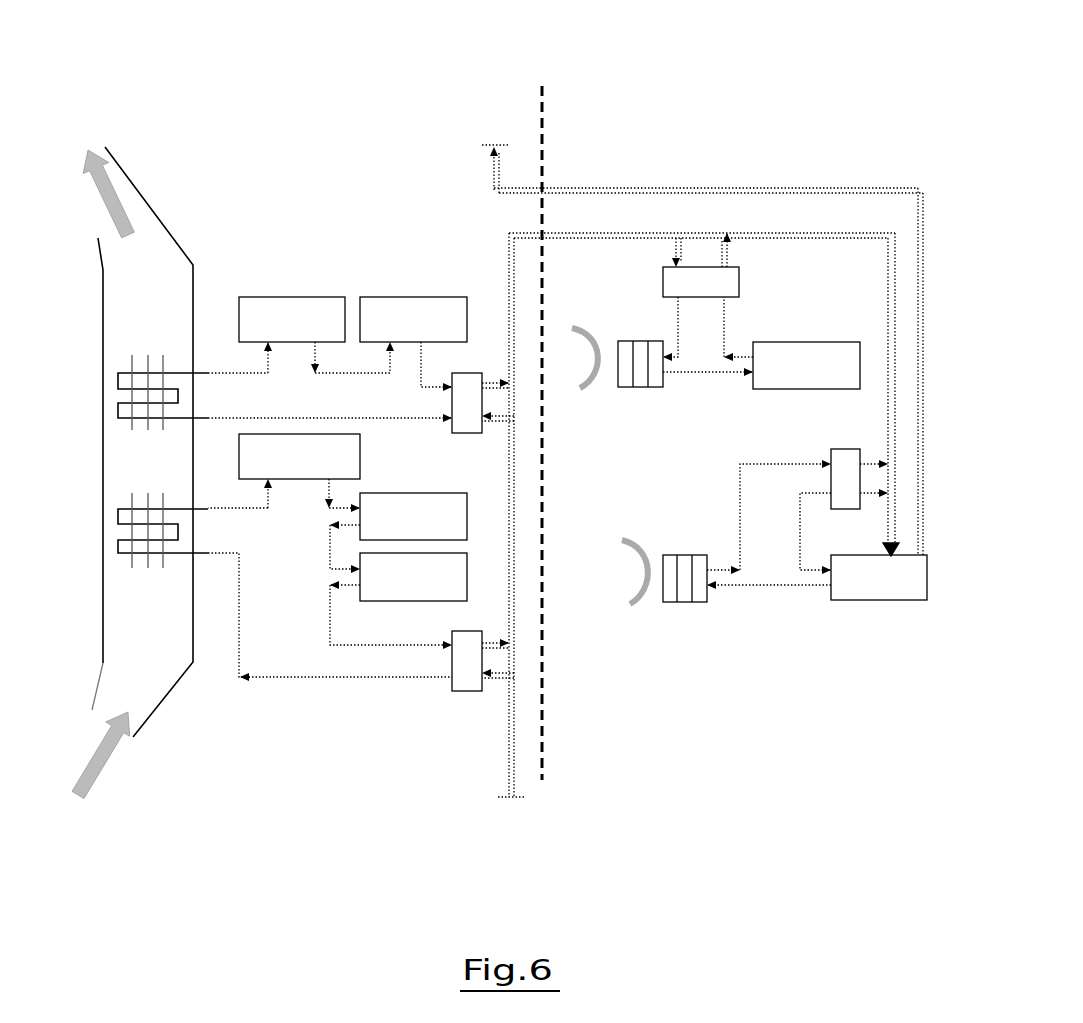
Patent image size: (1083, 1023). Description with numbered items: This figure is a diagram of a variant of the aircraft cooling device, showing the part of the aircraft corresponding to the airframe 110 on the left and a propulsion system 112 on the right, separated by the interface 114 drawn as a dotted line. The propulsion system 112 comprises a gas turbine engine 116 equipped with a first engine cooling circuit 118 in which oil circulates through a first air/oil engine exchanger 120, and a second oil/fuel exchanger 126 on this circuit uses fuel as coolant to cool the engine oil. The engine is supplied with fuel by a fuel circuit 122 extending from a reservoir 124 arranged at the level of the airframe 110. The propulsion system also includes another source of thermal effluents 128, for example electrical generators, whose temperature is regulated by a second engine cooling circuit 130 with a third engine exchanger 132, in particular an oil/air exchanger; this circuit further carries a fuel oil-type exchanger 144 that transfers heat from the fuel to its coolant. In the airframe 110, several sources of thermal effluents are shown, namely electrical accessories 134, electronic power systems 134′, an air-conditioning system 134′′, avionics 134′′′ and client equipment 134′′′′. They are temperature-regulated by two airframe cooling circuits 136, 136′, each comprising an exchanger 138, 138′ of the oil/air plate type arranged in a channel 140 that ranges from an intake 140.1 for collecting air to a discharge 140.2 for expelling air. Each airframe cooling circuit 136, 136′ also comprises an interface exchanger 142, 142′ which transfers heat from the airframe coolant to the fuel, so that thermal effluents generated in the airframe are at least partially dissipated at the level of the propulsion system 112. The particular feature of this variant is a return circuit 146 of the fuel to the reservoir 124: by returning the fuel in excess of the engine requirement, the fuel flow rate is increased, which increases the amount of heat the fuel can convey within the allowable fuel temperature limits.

The airframe 110 is at (296, 95).
The propulsion system 112 is at (712, 95).
The interface 114 is at (542, 90).
The gas turbine engine 116 is at (838, 592).
The first engine cooling circuit 118 is at (740, 525).
The first air/oil engine exchanger 120 is at (667, 590).
The fuel circuit 122 is at (615, 233).
The reservoir 124 is at (488, 143).
The second oil/fuel exchanger 126 is at (833, 452).
The source of thermal effluents 128 is at (770, 350).
The second engine cooling circuit 130 is at (675, 372).
The third engine exchanger 132 is at (637, 387).
The electrical accessories 134 is at (261, 302).
The electronic power systems 134′ is at (381, 302).
The air-conditioning system 134′′ is at (356, 464).
The avionics 134′′′ is at (390, 500).
The client equipment 134′′′′ is at (373, 594).
The airframe cooling circuit 136 is at (316, 418).
The airframe cooling circuit 136′ is at (347, 677).
The exchanger 138 is at (133, 372).
The exchanger 138′ is at (118, 508).
The channel 140 is at (103, 618).
The intake 140.1 is at (133, 737).
The discharge 140.2 is at (130, 180).
The interface exchanger 142 is at (456, 402).
The interface exchanger 142′ is at (462, 683).
The fuel oil-type exchanger 144 is at (665, 290).
The return circuit 146 is at (720, 188).